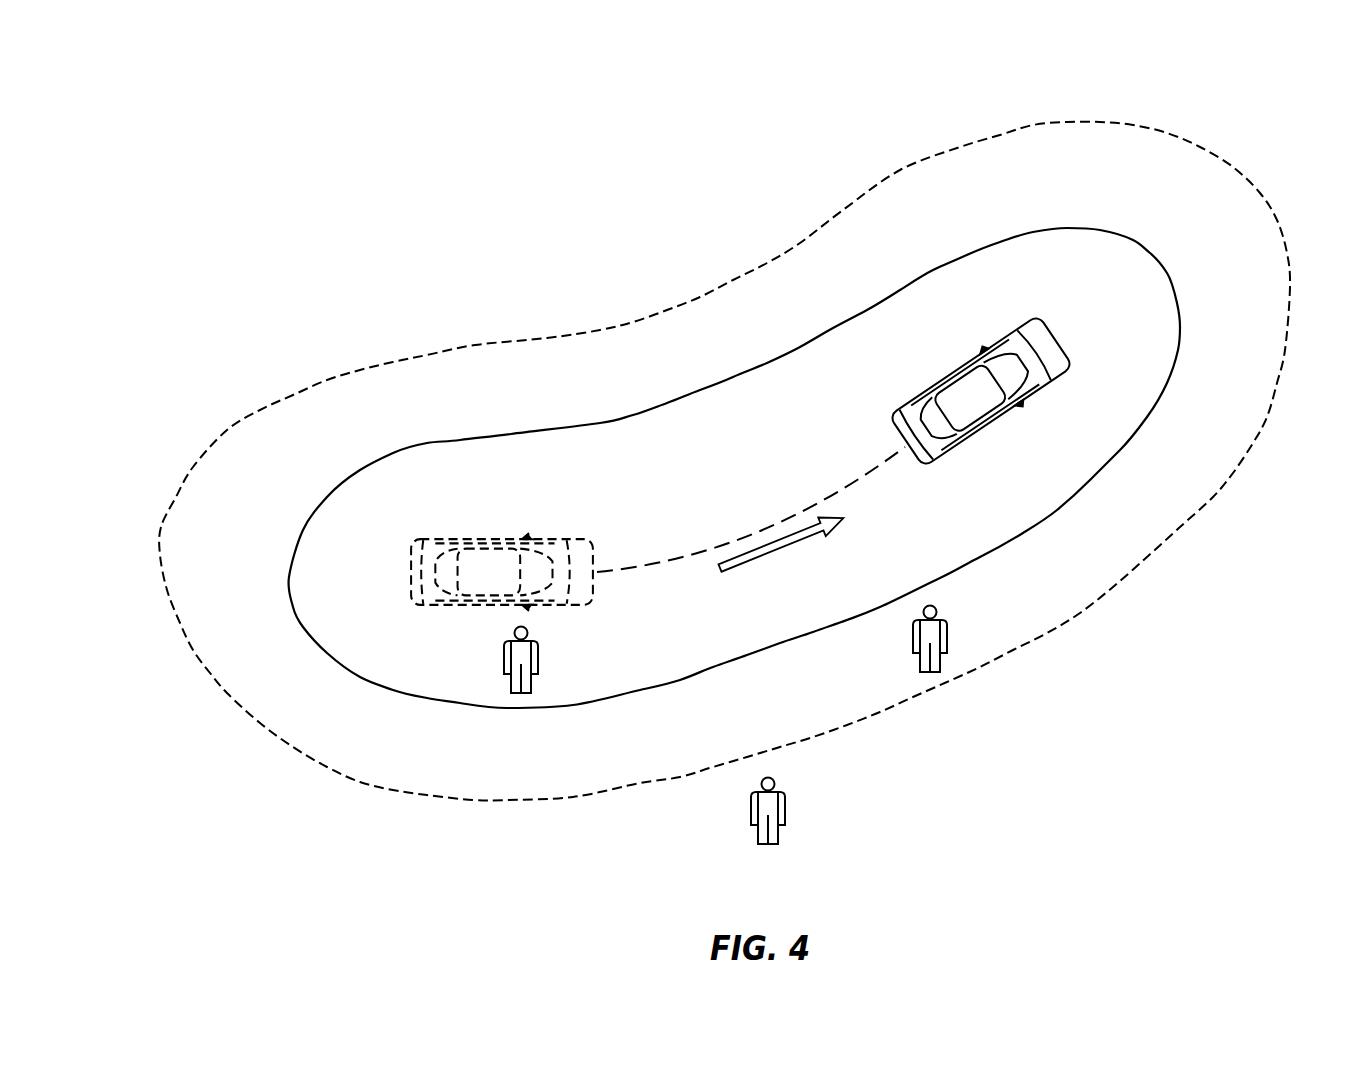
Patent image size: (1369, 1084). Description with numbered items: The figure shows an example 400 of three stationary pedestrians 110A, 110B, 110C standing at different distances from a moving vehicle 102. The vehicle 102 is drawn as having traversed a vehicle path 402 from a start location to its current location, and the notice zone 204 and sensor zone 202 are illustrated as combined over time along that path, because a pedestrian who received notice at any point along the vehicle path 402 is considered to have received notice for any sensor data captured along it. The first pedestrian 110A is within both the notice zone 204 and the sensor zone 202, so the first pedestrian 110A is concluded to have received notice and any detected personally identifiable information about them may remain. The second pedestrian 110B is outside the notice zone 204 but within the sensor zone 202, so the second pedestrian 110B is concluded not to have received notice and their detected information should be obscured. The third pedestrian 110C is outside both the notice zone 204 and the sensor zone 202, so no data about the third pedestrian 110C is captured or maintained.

The example 400 is at (229, 73).
The sensor zone 202 is at (843, 210).
The notice zone 204 is at (596, 423).
The vehicle path 402 is at (792, 512).
The vehicle 102 is at (743, 460).
The first pedestrian 110A is at (471, 660).
The second pedestrian 110B is at (977, 630).
The third pedestrian 110C is at (818, 811).